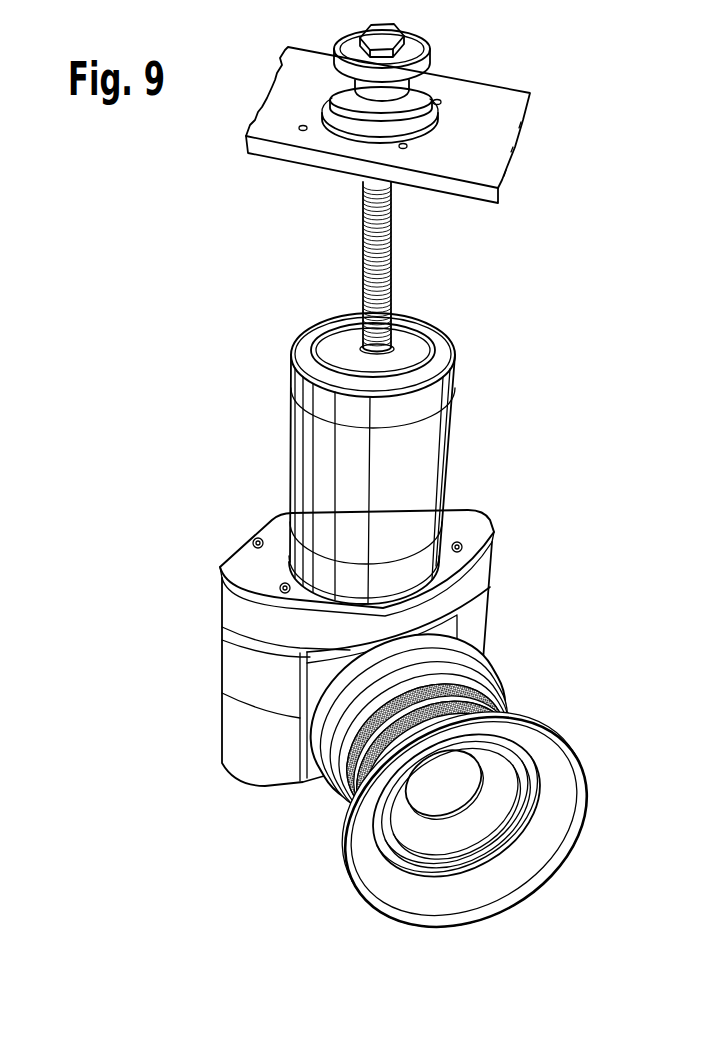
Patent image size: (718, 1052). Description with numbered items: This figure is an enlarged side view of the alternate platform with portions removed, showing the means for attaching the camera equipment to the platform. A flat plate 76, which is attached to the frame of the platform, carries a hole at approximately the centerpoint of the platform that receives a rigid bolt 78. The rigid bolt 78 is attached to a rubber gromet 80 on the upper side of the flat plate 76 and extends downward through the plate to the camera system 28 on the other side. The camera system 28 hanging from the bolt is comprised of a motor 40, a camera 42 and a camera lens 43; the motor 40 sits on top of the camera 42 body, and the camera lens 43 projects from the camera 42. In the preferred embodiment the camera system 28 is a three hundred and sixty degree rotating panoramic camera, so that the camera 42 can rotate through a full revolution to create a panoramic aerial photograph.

The camera system 28 is at (525, 488).
The motor 40 is at (423, 452).
The camera 42 is at (503, 638).
The camera lens 43 is at (553, 765).
The flat plate 76 is at (497, 112).
The rigid bolt 78 is at (386, 260).
The rubber gromet 80 is at (410, 52).